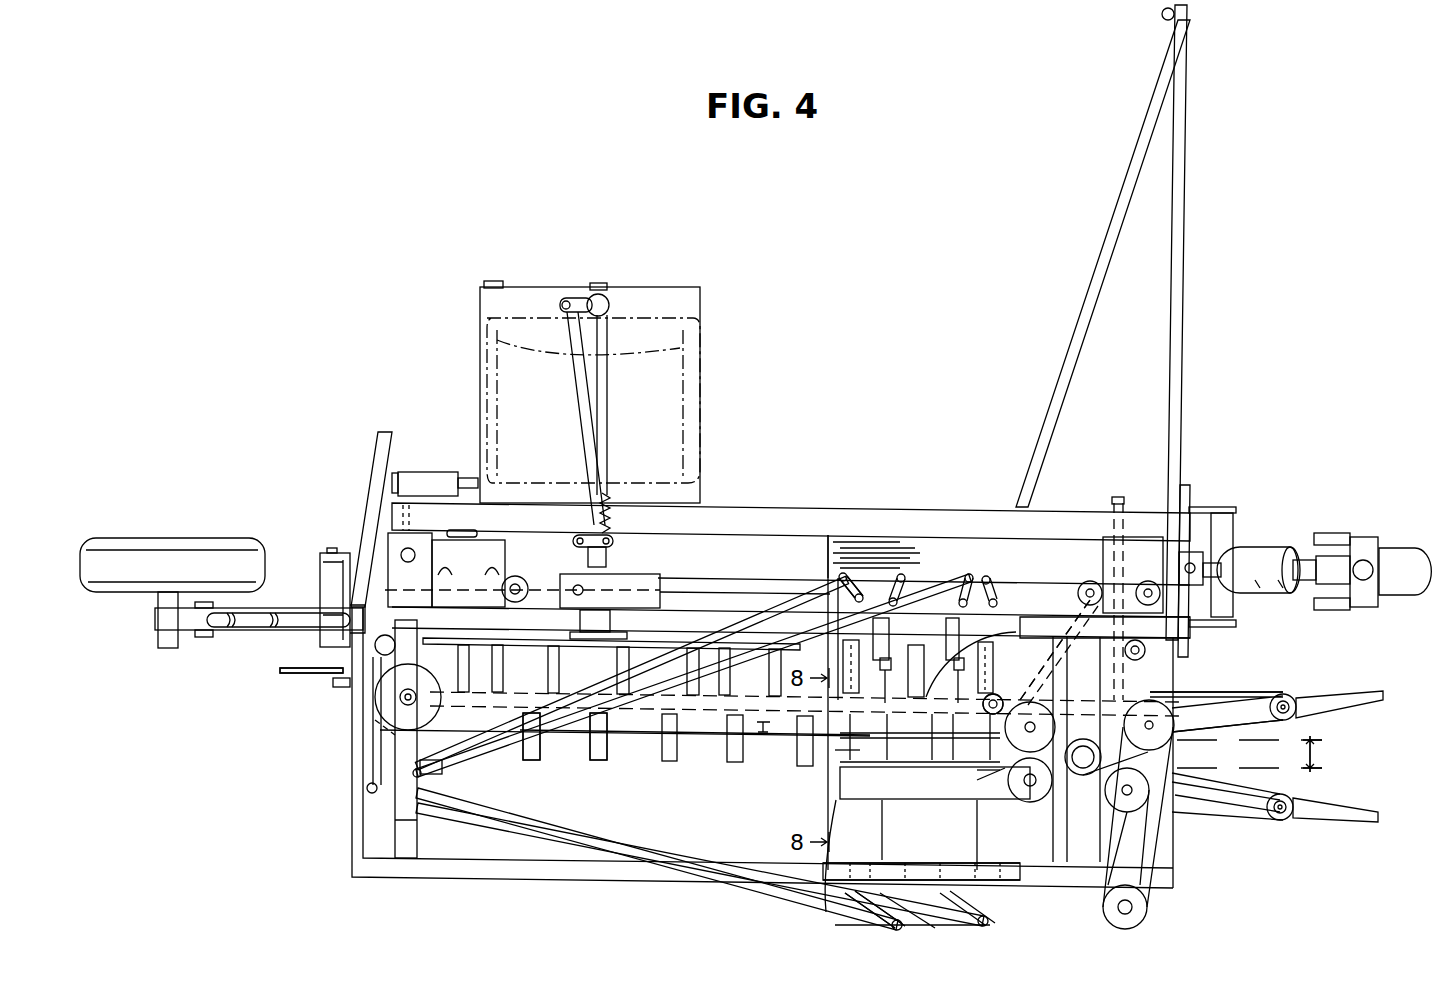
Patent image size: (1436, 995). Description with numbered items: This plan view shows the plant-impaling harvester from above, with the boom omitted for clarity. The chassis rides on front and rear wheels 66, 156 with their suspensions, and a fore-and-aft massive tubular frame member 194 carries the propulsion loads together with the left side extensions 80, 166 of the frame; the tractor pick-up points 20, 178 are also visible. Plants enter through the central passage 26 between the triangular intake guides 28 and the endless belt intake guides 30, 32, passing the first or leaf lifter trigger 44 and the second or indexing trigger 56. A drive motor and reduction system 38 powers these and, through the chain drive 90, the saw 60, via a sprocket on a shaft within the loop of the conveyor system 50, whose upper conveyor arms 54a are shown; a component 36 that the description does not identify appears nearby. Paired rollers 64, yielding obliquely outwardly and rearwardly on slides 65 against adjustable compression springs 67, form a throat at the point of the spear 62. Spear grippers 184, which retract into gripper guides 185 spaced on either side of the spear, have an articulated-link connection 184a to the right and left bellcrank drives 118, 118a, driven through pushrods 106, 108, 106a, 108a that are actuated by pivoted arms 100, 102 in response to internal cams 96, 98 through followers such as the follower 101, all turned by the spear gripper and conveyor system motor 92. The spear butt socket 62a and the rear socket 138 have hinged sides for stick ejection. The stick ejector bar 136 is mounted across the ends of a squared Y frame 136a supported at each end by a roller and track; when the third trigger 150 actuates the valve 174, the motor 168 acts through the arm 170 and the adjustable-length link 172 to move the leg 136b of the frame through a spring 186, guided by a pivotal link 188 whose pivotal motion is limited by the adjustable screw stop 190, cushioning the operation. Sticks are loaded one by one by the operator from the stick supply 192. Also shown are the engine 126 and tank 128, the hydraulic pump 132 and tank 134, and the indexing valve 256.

The tractor pick-up point 20 is at (1168, 28).
The left side extension of the frame 80 is at (1186, 58).
The fore-and-aft tubular frame member 194 is at (711, 512).
The rear wheel 156 is at (222, 538).
The tank 128 is at (388, 553).
The valve 174 is at (440, 472).
The left side extension of the frame 166 is at (690, 290).
The tractor pick-up point 178 is at (488, 282).
The arm 170 is at (580, 298).
The motor 168 is at (600, 294).
The adjustable-length link 172 is at (576, 410).
The leg of the Y frame 136b is at (603, 424).
The spring 186 is at (612, 520).
The pivotal link 188 is at (613, 541).
The adjustable screw stop 190 is at (598, 560).
The engine 126 is at (505, 552).
The hydraulic tank 134 is at (660, 580).
The squared Y frame 136a is at (731, 575).
The hydraulic pump 132 is at (611, 643).
The stick supply 192 is at (905, 570).
The bellcrank drive 118a is at (857, 580).
The indexing valve 256 is at (1112, 512).
The bearing block 36 is at (1155, 580).
The chain drive 90 is at (1060, 640).
The saw 60 is at (1017, 640).
The front wheel 66 is at (1393, 515).
The drive motor and reduction system 38 is at (1190, 668).
The endless belt intake guide 32 is at (1210, 694).
The triangular intake guide 28 is at (1318, 693).
The central passage 26 is at (1316, 754).
The endless belt intake guide 30 is at (1228, 824).
The leaf lifter trigger 44 is at (1170, 825).
The indexing trigger 56 is at (1120, 770).
The slide 65 is at (1012, 790).
The adjustable compression spring 67 is at (1010, 775).
The paired rollers 64 is at (1010, 760).
The spear 62 is at (920, 762).
The spear butt socket 62a is at (838, 753).
The spear gripper 184 is at (830, 770).
The gripper guide 185 is at (895, 790).
The bellcrank drive 118 is at (920, 880).
The articulated-link connection 184a is at (835, 900).
The conveyor system 50 is at (785, 728).
The stick ejector bar 136 is at (727, 760).
The upper conveyor arm 54a is at (680, 762).
The pushrod 106a is at (525, 760).
The pushrod 108a is at (604, 760).
The pushrod 106 is at (500, 775).
The pushrod 108 is at (532, 822).
The third trigger 150 is at (438, 770).
The pivoted arm 100 is at (395, 745).
The pivoted arm 102 is at (367, 789).
The rear socket 138 is at (420, 765).
The follower 101 is at (370, 722).
The internal cam 96 is at (395, 694).
The spear gripper and conveyor system motor 92 is at (390, 680).
The internal cam 98 is at (395, 660).